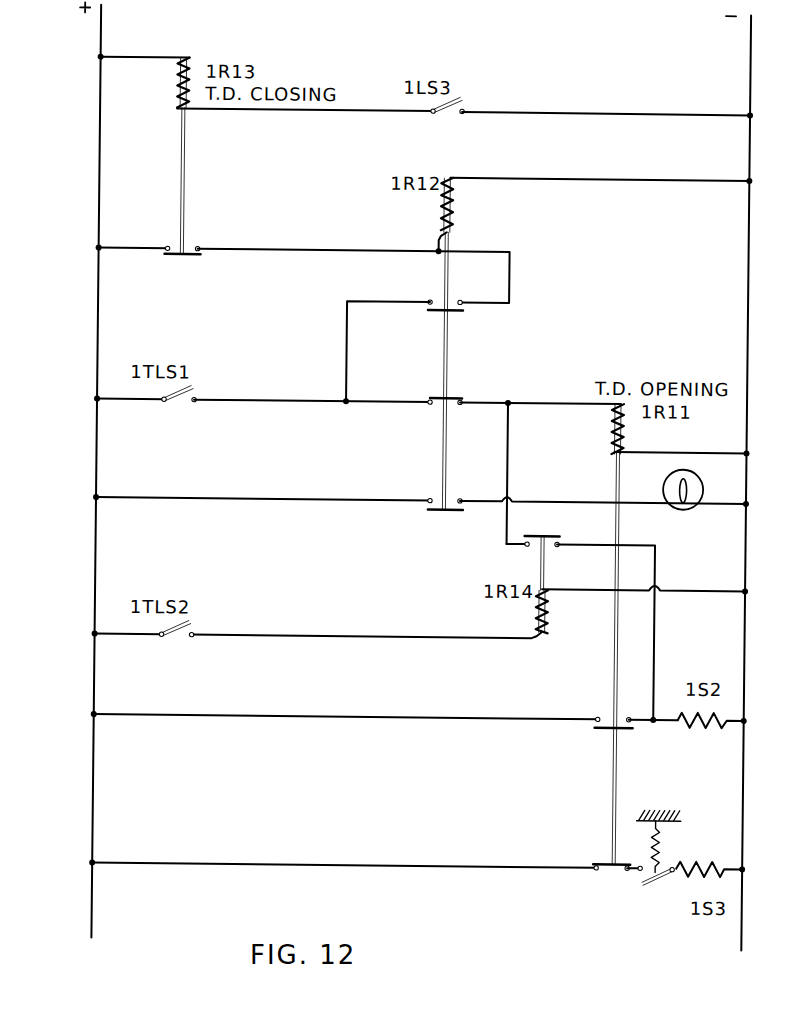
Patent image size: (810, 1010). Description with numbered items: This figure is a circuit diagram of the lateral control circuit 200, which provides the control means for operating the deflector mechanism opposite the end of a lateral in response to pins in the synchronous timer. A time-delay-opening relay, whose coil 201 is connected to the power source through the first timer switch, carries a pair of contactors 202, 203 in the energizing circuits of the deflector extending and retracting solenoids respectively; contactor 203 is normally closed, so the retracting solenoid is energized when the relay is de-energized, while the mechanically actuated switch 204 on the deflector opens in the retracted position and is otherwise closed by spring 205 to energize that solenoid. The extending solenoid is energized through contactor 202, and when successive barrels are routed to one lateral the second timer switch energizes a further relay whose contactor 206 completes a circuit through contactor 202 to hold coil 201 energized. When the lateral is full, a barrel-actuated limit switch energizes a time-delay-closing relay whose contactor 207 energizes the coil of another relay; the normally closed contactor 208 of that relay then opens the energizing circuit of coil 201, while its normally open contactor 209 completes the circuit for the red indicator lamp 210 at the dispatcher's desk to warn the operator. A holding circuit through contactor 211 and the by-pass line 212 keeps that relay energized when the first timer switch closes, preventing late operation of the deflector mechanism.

The lateral control circuit 200 is at (40, 410).
The coil of relay 1R11 201 is at (611, 430).
The contactor 202 is at (606, 723).
The contactor 203 is at (604, 864).
The mechanically actuated switch 204 is at (650, 885).
The spring 205 is at (662, 843).
The contactor 206 is at (553, 537).
The contactor 207 is at (185, 252).
The normally closed contactor 208 is at (452, 396).
The contactor 209 is at (448, 498).
The red indicator lamp 210 is at (701, 483).
The contactor 211 is at (456, 311).
The line 212 is at (345, 358).